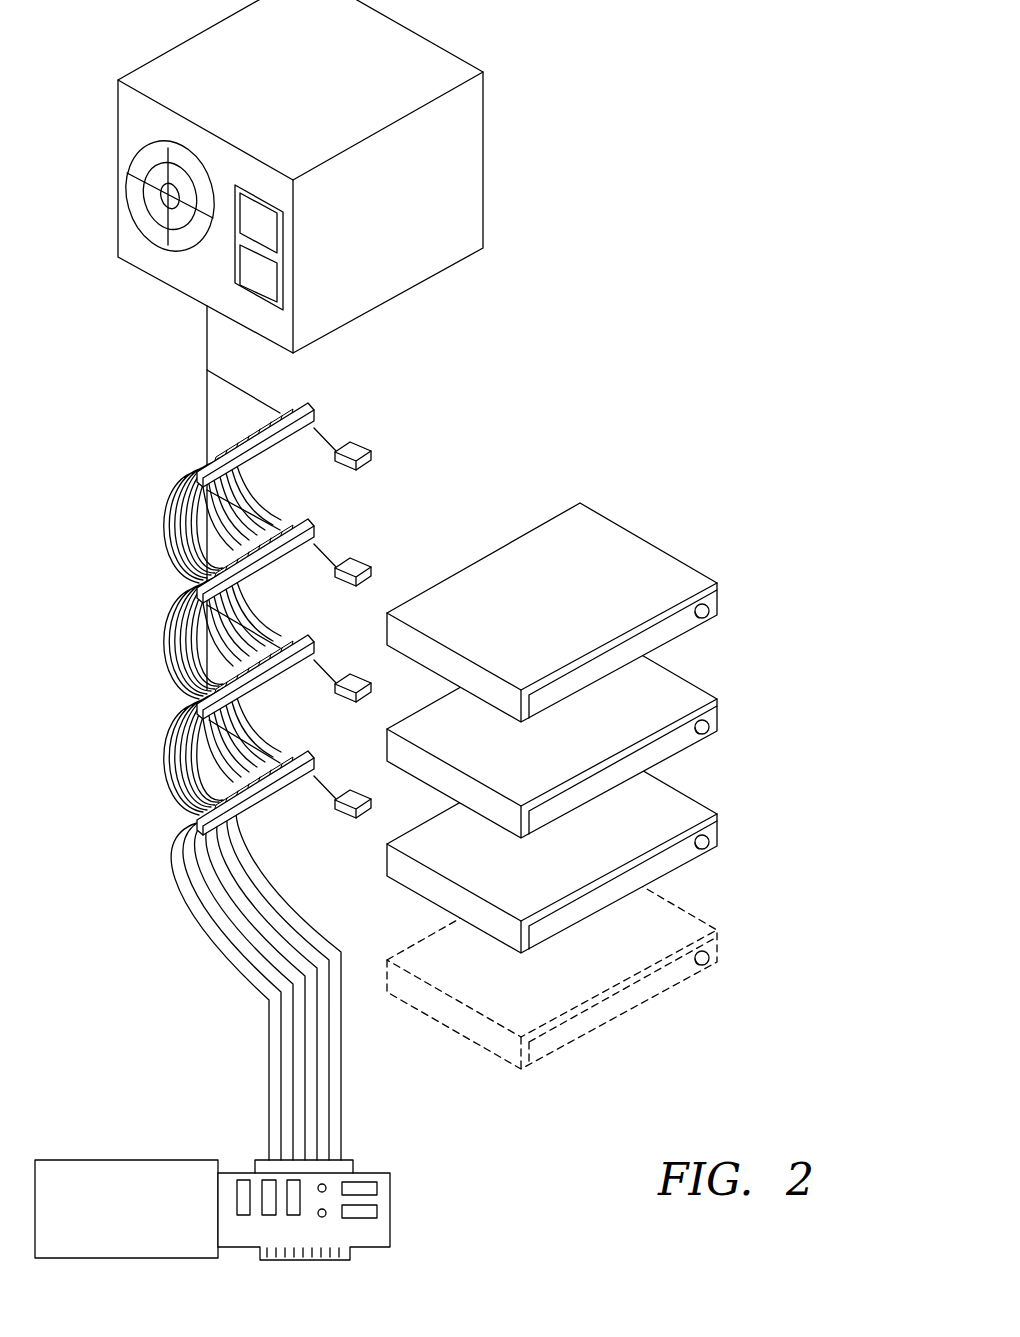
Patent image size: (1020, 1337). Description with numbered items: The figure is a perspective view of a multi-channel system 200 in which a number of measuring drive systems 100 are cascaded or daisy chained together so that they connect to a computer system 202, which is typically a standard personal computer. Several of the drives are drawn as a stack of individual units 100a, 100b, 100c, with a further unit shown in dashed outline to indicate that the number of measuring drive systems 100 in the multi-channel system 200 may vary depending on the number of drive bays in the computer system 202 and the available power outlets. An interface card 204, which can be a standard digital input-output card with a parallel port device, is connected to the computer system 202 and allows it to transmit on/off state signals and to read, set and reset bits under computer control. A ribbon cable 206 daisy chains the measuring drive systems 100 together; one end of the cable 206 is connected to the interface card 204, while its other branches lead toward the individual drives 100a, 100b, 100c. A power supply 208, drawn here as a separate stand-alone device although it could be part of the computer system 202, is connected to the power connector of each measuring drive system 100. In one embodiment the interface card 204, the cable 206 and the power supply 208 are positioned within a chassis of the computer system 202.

The multi-channel system 200 is at (673, 258).
The power supply 208 is at (160, 278).
The cable 206 is at (313, 806).
The computer system 202 is at (115, 1160).
The interface card 204 is at (390, 1208).
The disk drive C1 100a is at (738, 615).
The disk drive C2 100b is at (738, 731).
The disk drive C3 100c is at (738, 846).
The measuring drive system 100 is at (738, 962).